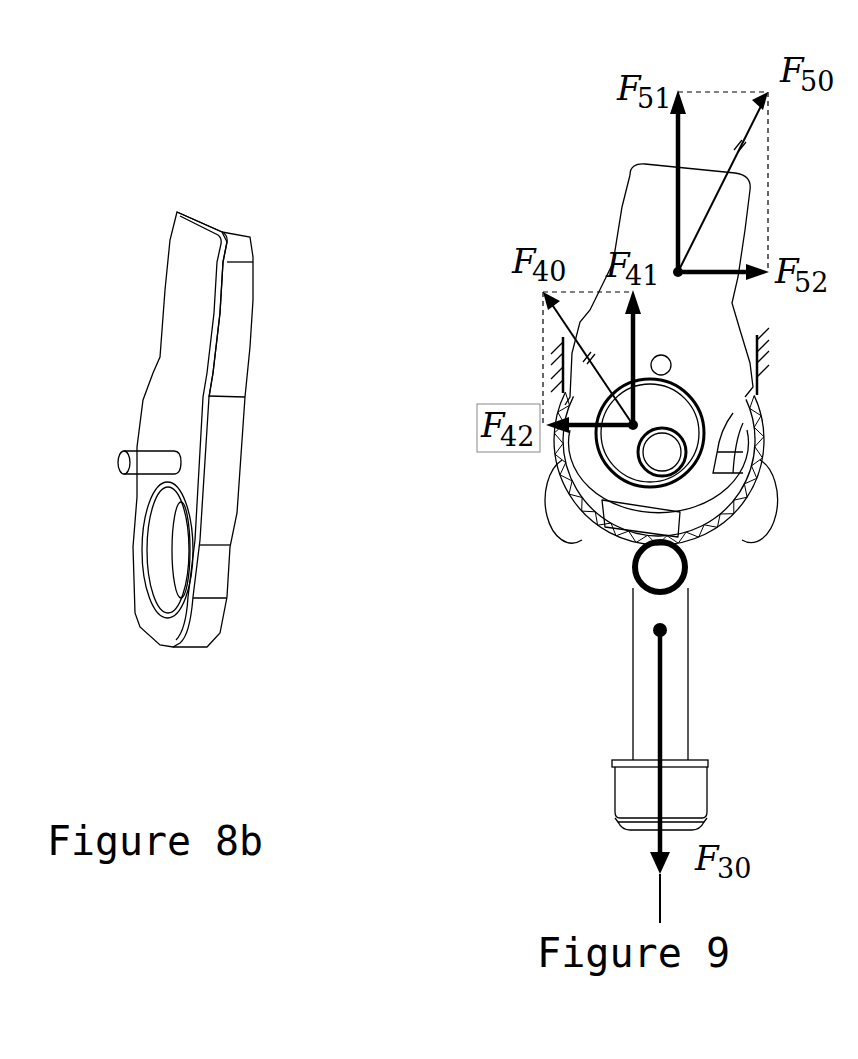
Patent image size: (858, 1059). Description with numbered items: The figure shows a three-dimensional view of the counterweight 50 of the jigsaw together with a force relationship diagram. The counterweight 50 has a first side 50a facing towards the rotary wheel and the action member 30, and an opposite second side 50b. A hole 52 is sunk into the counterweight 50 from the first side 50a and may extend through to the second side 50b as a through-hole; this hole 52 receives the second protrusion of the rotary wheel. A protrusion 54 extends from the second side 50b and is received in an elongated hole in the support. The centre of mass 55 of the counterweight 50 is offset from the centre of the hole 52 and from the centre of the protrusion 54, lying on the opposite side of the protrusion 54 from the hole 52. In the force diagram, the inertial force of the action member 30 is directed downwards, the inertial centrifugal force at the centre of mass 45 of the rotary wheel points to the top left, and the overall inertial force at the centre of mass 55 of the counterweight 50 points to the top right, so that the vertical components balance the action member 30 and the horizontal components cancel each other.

In FIG. 8b, the counterweight 50 is at (185, 347).
In FIG. 8b, the first side 50a is at (253, 303).
In FIG. 8b, the second side 50b is at (180, 250).
In FIG. 8b, the hole 52 is at (177, 568).
In FIG. 8b, the protrusion 54 is at (123, 458).
In FIG. 9, the centre of mass 55 is at (676, 270).
In FIG. 9, the centre of mass 45 is at (637, 427).
In FIG. 9, the action member 30 is at (643, 668).